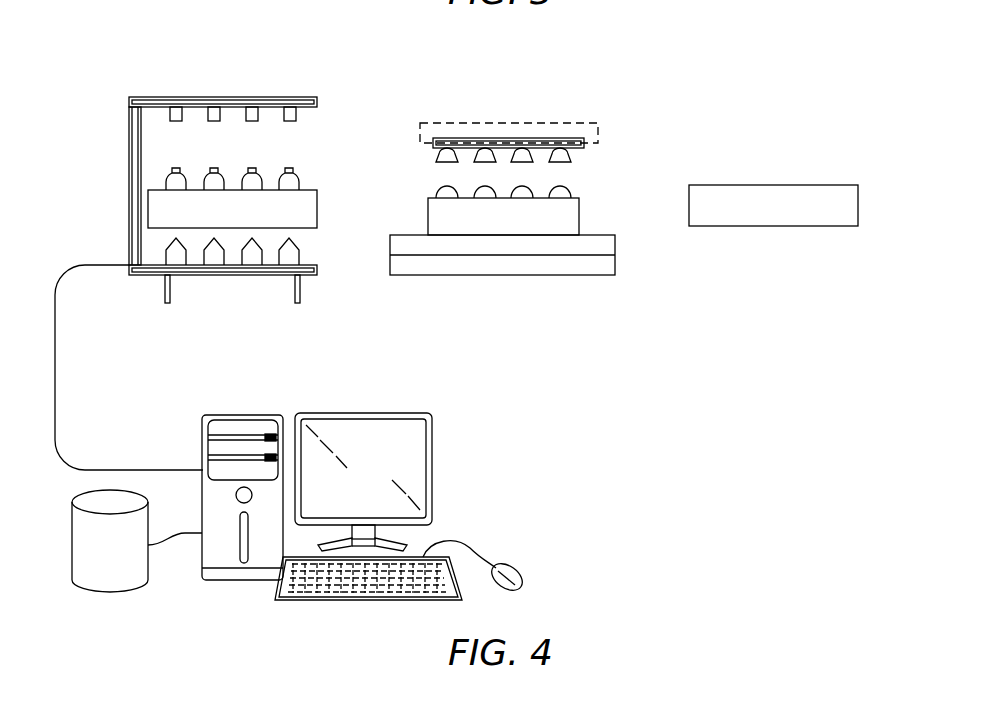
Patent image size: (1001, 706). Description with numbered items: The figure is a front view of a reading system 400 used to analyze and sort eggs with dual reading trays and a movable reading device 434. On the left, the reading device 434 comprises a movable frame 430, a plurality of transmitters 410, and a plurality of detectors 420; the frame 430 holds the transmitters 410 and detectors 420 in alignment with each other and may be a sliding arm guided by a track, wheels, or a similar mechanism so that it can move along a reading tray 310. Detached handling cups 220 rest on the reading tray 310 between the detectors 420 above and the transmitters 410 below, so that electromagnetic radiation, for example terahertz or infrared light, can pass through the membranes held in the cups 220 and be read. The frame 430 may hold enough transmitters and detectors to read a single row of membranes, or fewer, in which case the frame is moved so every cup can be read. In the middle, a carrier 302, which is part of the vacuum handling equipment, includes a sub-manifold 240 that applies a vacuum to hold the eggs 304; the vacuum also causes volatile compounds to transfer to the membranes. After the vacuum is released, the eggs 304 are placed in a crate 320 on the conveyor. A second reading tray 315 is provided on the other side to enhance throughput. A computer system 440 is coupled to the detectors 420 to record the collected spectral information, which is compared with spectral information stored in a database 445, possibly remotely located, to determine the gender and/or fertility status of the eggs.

The reading system 400 is at (112, 52).
The movable frame 430 is at (235, 97).
The reading device 434 is at (110, 150).
The detectors 420 is at (296, 114).
The detached handling cups 220 is at (296, 185).
The reading tray 310 is at (310, 204).
The transmitters 410 is at (297, 257).
The carrier 302 is at (572, 124).
The sub-manifold 240 is at (590, 143).
The eggs 304 is at (568, 186).
The crate 320 is at (580, 220).
The reading tray 315 is at (850, 205).
The computer system 440 is at (243, 414).
The database 445 is at (132, 572).